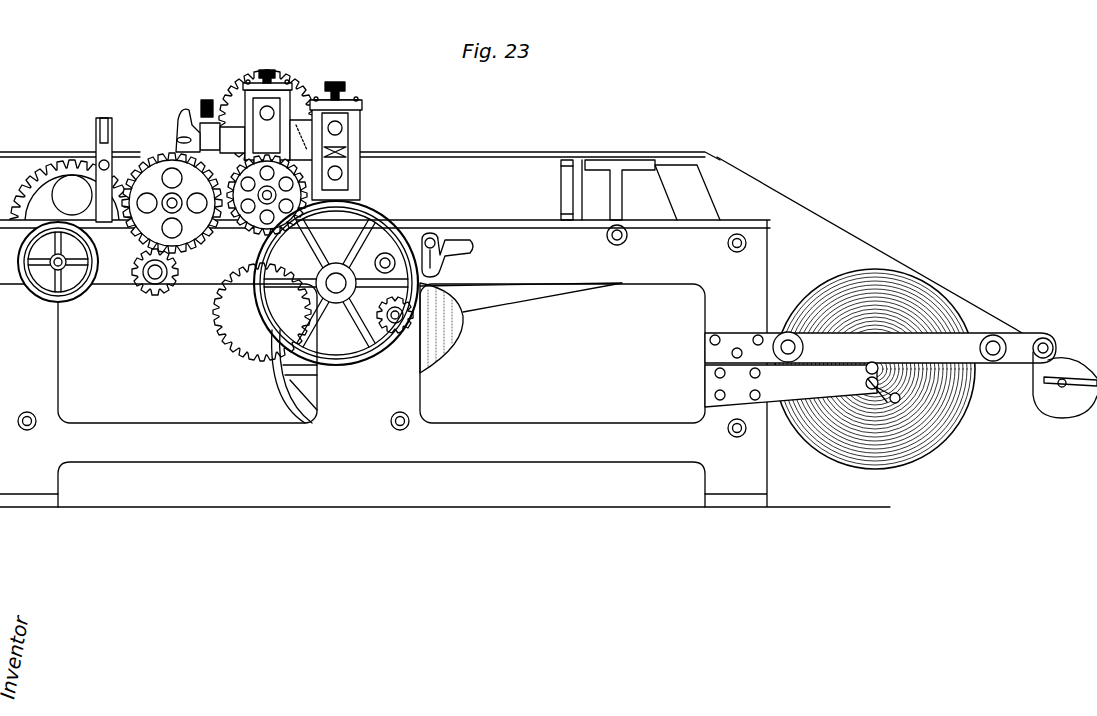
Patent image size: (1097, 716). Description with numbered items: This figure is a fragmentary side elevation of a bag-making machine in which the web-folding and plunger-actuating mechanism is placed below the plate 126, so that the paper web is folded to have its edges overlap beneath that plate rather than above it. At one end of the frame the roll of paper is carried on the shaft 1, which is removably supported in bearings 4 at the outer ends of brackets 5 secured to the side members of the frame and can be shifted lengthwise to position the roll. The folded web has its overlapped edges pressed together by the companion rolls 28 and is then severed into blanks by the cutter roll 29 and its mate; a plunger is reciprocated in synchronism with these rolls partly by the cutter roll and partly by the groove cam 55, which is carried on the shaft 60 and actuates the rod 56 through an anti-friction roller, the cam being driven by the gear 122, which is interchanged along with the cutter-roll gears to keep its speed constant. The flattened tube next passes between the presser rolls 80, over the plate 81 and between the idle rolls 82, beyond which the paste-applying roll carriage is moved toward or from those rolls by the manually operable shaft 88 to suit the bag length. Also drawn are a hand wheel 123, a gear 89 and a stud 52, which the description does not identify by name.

The shaft 1 is at (879, 369).
The bearings 4 is at (860, 377).
The brackets 5 is at (803, 383).
The companion rolls 28 is at (348, 152).
The cutter roll 29 is at (237, 92).
The stud 52 is at (631, 246).
The cam 55 is at (447, 322).
The rod 56 is at (527, 291).
The shaft 60 is at (408, 338).
The presser rolls 80 is at (196, 112).
The plate 81 is at (135, 153).
The idle rolls 82 is at (123, 140).
The manually operable shaft 88 is at (60, 264).
The gear wheel 89 is at (50, 153).
The gear 122 is at (418, 337).
The hand wheel 123 is at (338, 285).
The plate 126 is at (500, 152).